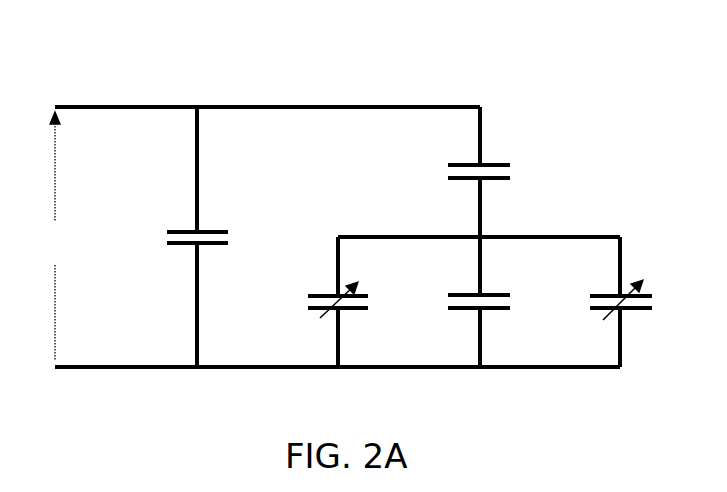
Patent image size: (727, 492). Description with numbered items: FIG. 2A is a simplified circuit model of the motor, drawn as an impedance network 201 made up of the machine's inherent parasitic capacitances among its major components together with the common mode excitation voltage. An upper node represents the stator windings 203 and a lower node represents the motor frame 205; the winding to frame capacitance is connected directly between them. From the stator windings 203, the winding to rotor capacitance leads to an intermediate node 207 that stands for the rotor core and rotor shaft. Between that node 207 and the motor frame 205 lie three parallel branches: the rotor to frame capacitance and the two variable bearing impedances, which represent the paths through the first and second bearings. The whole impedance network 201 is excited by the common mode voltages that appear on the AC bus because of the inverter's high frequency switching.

The impedance network 201 is at (347, 218).
The stator windings 203 is at (222, 107).
The motor frame 205 is at (268, 368).
The intermediate node 207 is at (440, 237).